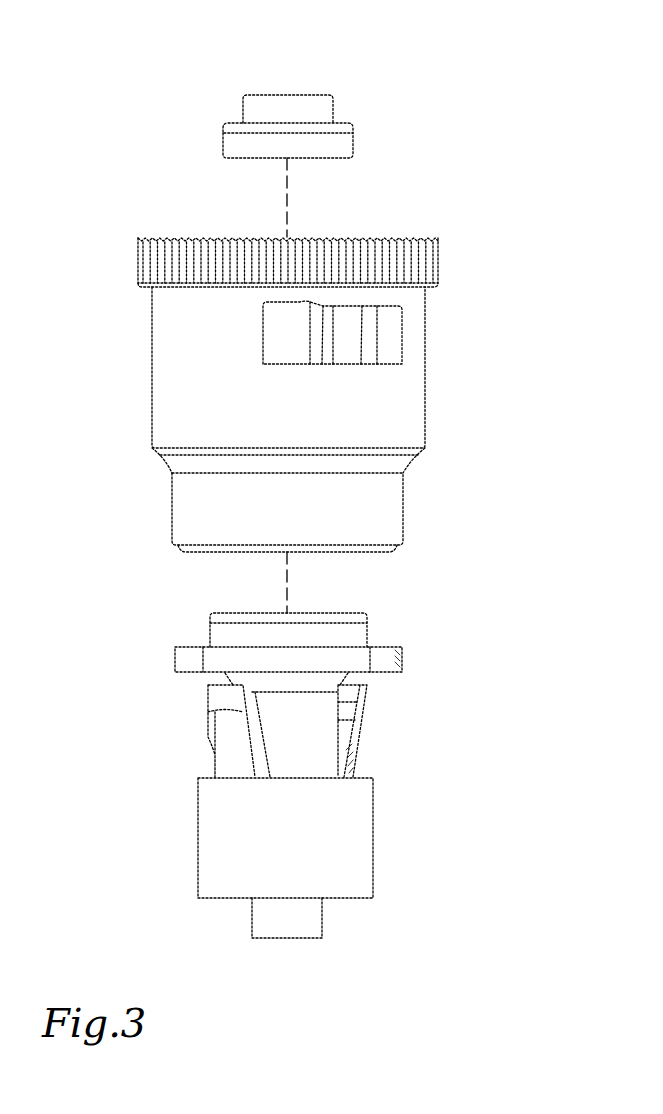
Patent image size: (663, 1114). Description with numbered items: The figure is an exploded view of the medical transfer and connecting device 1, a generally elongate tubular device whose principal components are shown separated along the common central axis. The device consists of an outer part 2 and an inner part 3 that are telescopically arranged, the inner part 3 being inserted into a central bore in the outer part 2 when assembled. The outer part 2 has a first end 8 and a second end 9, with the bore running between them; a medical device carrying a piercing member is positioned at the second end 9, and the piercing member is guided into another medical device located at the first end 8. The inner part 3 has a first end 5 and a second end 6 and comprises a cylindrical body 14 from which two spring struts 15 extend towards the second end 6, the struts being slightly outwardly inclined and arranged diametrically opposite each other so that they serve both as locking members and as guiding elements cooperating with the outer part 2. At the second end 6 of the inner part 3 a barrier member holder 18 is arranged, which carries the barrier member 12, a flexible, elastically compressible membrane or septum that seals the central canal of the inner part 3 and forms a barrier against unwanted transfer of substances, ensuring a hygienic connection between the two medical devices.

The medical transfer and connecting device 1 is at (538, 59).
The outer part 2 is at (370, 388).
The inner part 3 is at (327, 825).
The first end 5 is at (268, 937).
The second end 6 is at (236, 615).
The first end 8 is at (217, 548).
The second end 9 is at (383, 238).
The barrier member 12 is at (355, 138).
The cylindrical body 14 is at (237, 840).
The spring struts 15 is at (227, 740).
The barrier member holder 18 is at (336, 662).